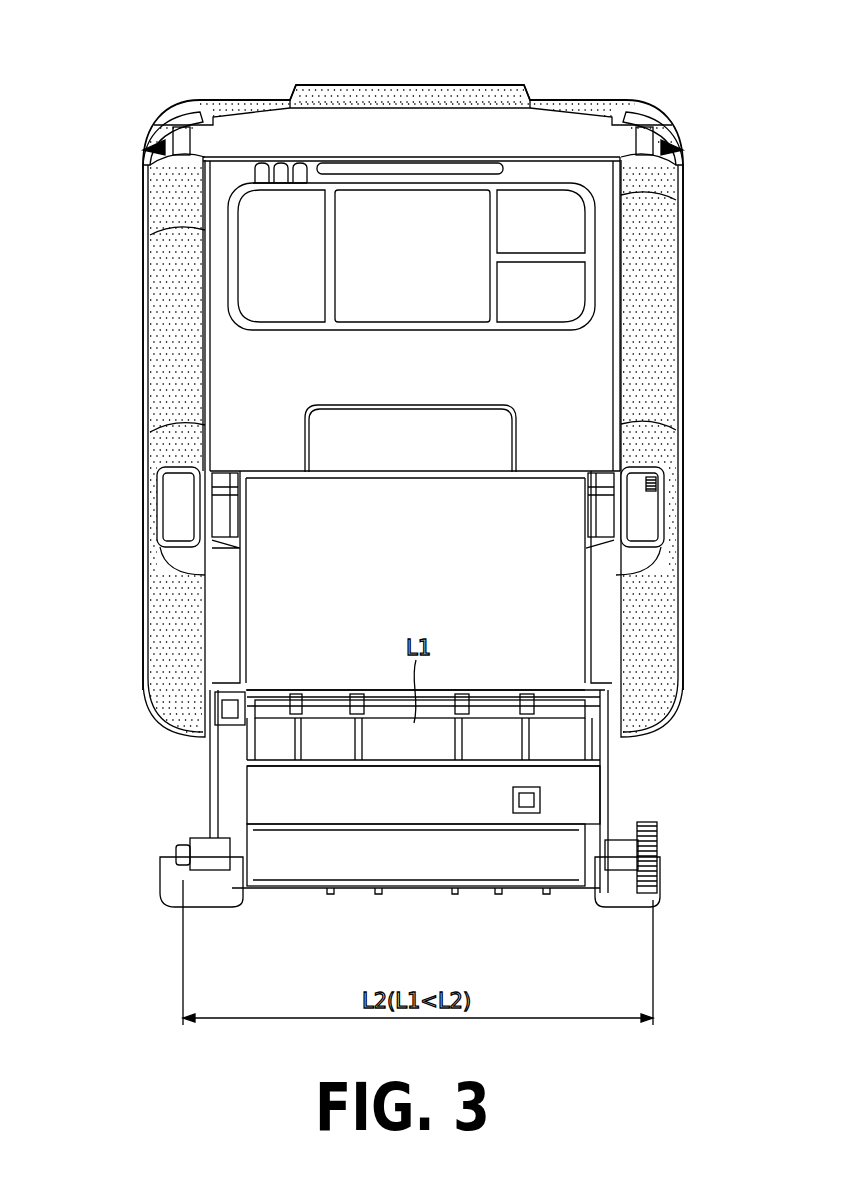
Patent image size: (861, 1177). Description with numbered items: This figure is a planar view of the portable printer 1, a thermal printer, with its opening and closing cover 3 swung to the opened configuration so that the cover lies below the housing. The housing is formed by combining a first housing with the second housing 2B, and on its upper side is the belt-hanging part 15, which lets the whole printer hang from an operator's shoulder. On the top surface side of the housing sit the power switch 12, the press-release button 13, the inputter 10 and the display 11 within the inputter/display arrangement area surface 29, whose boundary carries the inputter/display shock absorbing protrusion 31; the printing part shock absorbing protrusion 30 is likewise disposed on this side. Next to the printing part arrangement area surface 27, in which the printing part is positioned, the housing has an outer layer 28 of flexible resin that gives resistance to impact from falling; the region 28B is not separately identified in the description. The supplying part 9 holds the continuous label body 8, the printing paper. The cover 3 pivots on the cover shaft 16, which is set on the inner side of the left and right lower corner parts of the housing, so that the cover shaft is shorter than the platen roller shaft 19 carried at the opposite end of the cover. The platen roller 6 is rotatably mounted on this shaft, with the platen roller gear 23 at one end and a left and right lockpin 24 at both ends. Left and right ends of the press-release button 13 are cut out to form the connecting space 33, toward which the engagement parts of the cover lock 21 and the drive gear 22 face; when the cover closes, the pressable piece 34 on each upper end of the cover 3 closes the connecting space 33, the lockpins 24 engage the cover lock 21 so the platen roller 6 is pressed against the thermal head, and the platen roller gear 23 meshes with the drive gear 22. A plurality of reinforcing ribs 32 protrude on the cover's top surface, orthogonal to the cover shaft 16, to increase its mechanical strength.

The portable printer 1 is at (588, 58).
The second housing 2B is at (528, 173).
The opening and closing cover 3 is at (457, 893).
The platen roller 6 is at (403, 873).
The continuous label body 8 is at (592, 624).
The supplying part 9 is at (570, 658).
The inputter 10 is at (568, 293).
The display 11 is at (443, 205).
The power switch 12 is at (258, 207).
The press-release button 13 is at (402, 422).
The belt-hanging part 15 is at (157, 133).
The cover shaft 16 is at (230, 695).
The platen roller shaft 19 is at (178, 848).
The cover lock 21 is at (218, 503).
The drive gear 22 is at (657, 483).
The platen roller gear 23 is at (658, 830).
The lockpin 24 is at (202, 843).
The printing part arrangement area surface 27 is at (562, 384).
The outer layer 28 is at (202, 101).
The top cover bump 28B is at (431, 86).
The inputter/display arrangement area surface 29 is at (390, 212).
The printing part shock absorbing protrusion 30 is at (205, 423).
The inputter/display shock absorbing protrusion 31 is at (207, 228).
The reinforcing ribs 32 is at (327, 895).
The connecting space 33 is at (180, 518).
The pressable piece 34 is at (165, 878).